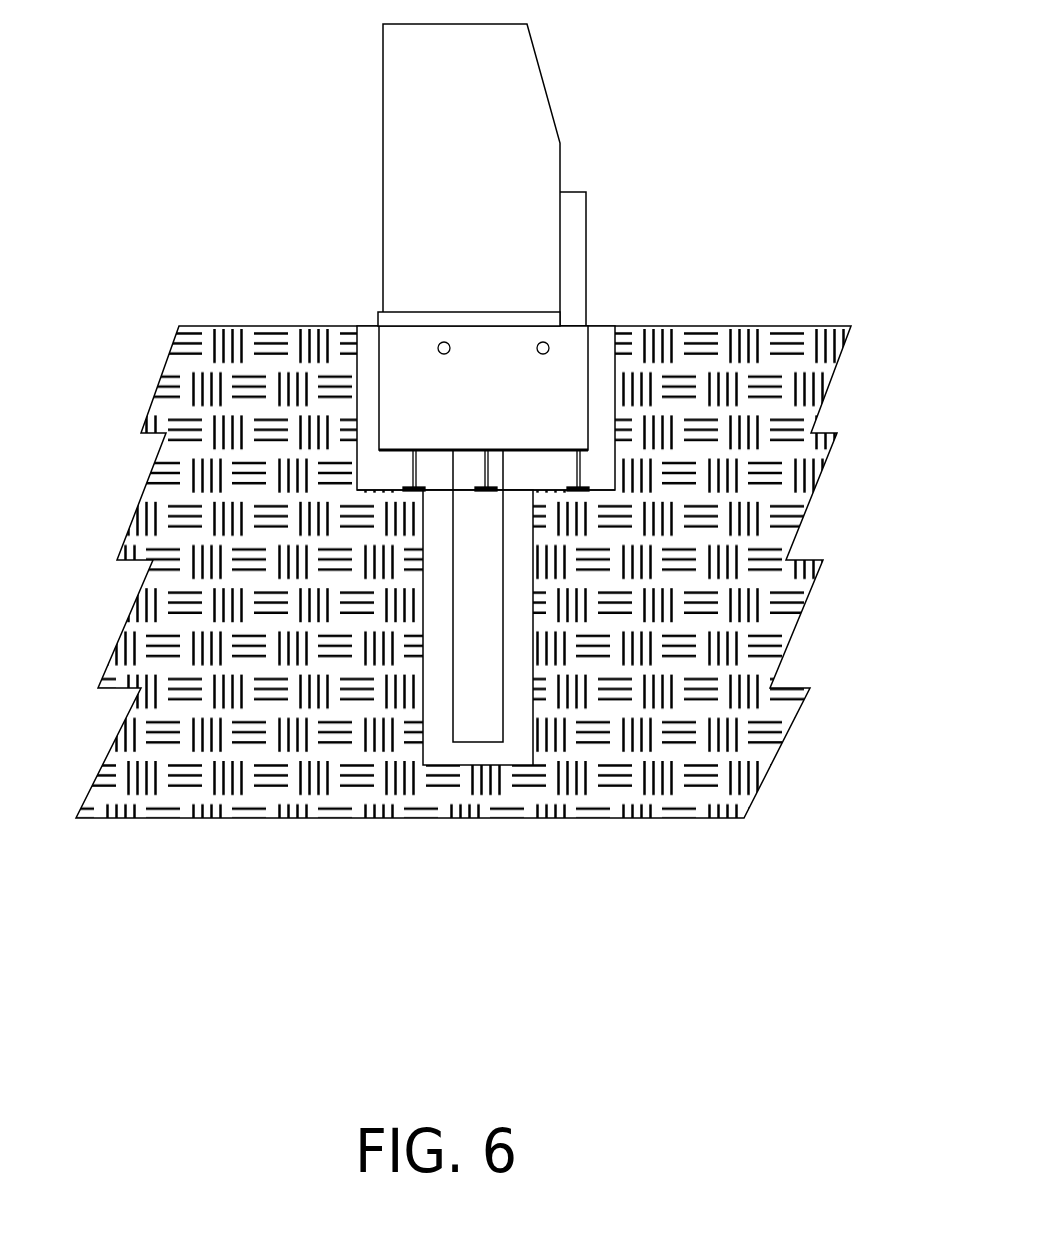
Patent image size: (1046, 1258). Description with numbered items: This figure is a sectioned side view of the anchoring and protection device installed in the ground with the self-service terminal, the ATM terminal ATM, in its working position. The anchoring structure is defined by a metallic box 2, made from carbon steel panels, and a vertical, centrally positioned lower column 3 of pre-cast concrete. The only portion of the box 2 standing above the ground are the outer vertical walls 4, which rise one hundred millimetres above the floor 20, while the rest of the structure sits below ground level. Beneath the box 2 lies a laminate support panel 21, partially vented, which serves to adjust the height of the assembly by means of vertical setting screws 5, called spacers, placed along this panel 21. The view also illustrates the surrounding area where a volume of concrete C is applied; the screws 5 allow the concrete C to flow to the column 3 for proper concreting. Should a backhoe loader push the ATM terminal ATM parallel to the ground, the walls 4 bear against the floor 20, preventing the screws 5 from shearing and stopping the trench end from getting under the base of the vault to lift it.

The ATM terminal ATM is at (413, 193).
The outer vertical walls 4 is at (453, 318).
The box 2 is at (410, 397).
The floor 20 is at (677, 343).
The concrete C is at (598, 347).
The laminate support panel 21 is at (425, 492).
The vertical setting screws 5 is at (578, 471).
The lower column 3 is at (483, 700).